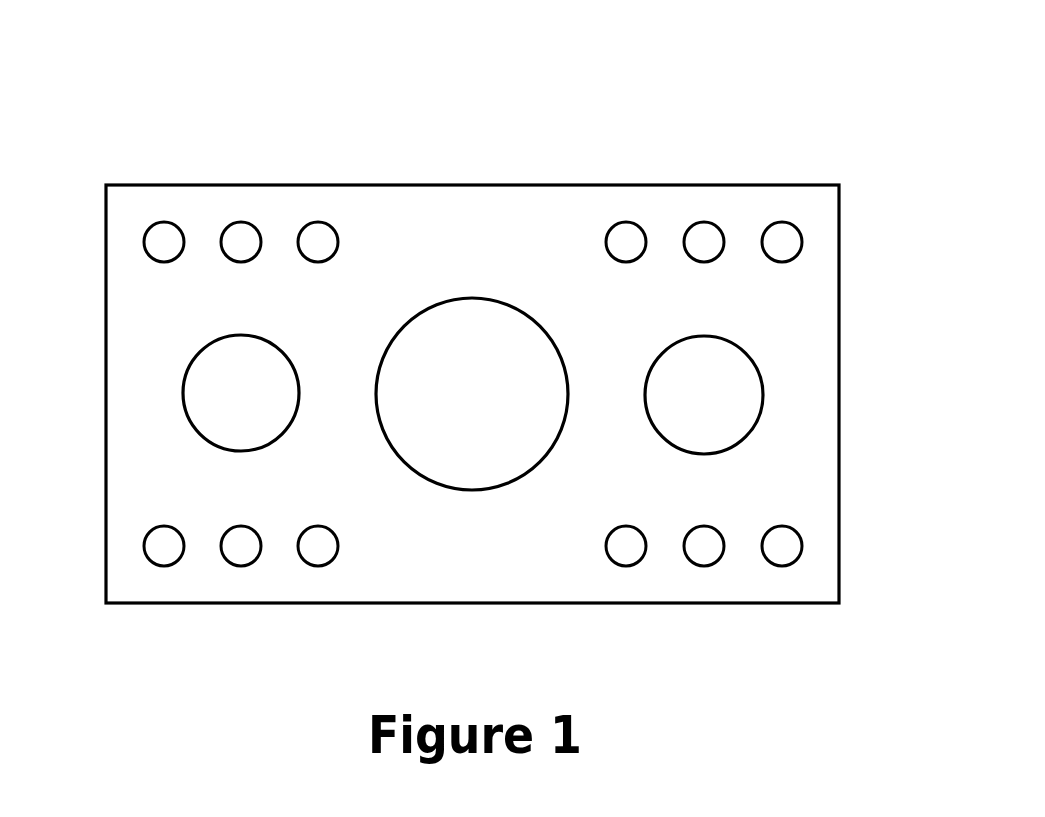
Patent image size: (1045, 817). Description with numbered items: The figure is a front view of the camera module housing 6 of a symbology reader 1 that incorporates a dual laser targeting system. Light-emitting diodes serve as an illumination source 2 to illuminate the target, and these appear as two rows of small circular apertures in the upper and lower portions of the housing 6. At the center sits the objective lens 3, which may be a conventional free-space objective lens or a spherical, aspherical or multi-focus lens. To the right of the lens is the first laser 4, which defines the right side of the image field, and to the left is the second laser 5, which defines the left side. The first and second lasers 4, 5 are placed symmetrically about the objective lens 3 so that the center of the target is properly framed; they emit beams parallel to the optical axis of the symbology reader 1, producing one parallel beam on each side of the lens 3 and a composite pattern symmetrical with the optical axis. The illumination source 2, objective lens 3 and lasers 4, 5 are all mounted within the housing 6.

The symbology reader 1 is at (482, 313).
The illumination source 2 is at (513, 424).
The objective lens 3 is at (498, 303).
The first laser 4 is at (167, 349).
The second laser 5 is at (780, 353).
The camera module housing 6 is at (516, 357).